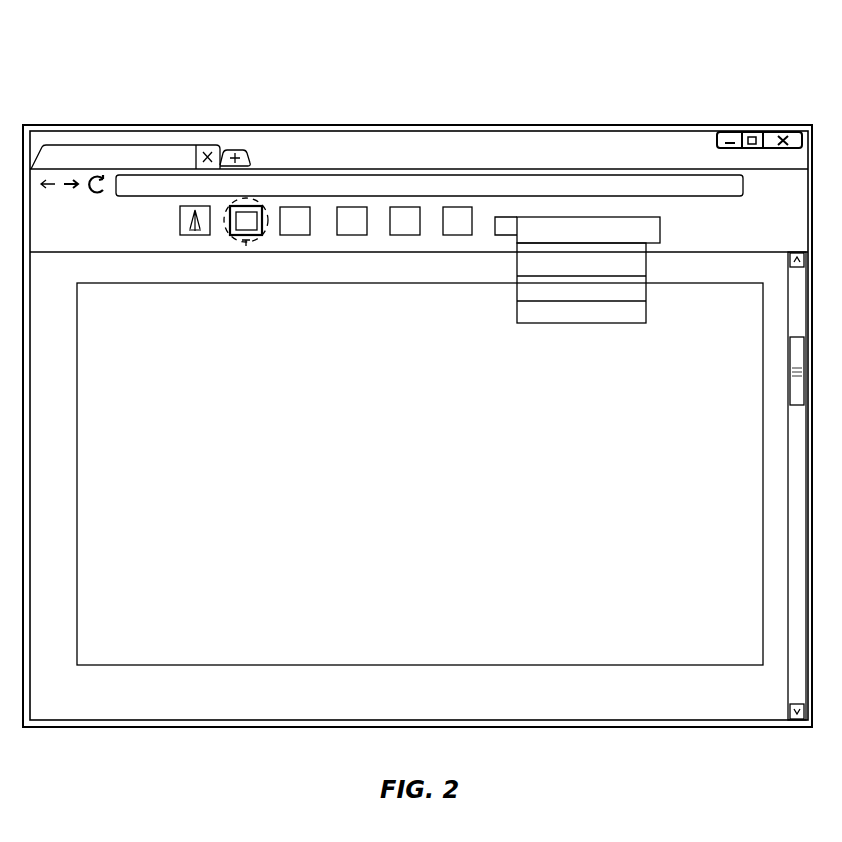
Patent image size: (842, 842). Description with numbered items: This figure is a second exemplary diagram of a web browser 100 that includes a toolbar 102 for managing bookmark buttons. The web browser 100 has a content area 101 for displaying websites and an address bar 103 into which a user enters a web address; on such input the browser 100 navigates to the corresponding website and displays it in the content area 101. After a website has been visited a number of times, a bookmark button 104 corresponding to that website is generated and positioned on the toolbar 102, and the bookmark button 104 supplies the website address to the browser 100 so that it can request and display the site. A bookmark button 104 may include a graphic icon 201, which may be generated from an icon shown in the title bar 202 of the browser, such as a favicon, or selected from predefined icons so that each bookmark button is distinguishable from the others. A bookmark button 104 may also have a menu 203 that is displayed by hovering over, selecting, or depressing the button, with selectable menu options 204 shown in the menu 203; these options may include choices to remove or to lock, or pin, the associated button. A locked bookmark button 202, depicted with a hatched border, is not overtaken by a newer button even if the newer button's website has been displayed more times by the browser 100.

The web browser 100 is at (86, 124).
The content area 101 is at (762, 452).
The toolbar 102 is at (136, 232).
The address bar 103 is at (180, 177).
The bookmark button 104 is at (407, 206).
The graphic icon 201 is at (195, 236).
The locked bookmark button 202 is at (135, 144).
The menu 203 is at (637, 254).
The selectable menu options 204 is at (646, 290).